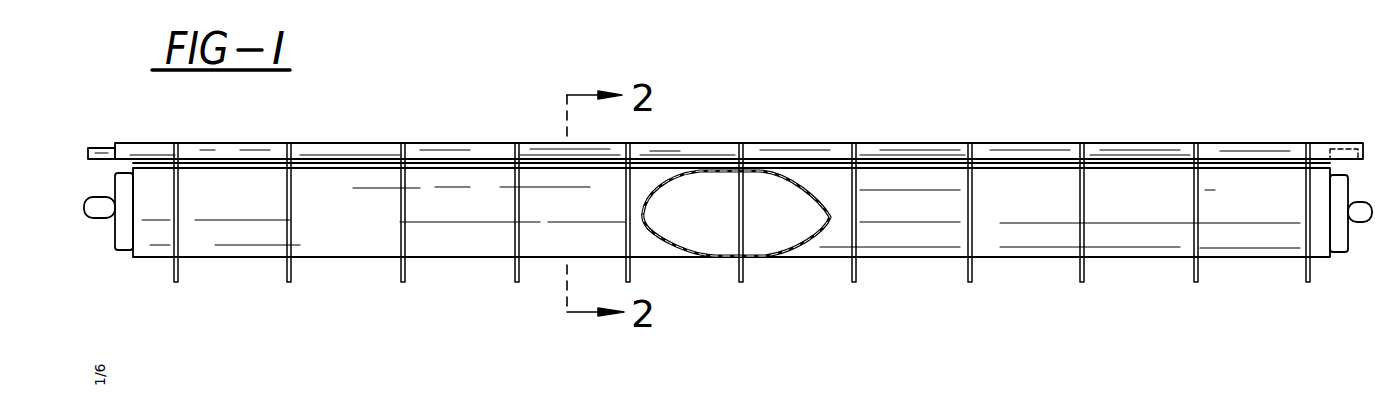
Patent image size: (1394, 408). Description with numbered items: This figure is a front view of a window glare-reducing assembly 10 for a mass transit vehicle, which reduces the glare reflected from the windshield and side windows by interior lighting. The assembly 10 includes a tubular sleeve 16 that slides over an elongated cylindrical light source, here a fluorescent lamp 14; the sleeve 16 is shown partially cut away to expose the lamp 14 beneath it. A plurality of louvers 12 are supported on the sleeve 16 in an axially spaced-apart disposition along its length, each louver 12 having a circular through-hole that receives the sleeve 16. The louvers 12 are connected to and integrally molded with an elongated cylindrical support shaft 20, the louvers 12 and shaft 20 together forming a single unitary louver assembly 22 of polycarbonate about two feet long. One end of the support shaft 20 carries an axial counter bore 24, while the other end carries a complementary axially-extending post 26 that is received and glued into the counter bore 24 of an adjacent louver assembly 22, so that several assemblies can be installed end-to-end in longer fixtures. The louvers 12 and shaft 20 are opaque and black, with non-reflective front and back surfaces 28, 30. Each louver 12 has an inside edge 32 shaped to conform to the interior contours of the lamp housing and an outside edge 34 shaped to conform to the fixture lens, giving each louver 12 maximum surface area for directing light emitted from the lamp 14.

The window glare-reducing assembly 10 is at (939, 133).
The louvers 12 is at (1194, 281).
The fluorescent lamp 14 is at (122, 248).
The tubular sleeve 16 is at (345, 238).
The support shaft 20 is at (442, 150).
The louver assembly 22 is at (341, 142).
The axial counter bore 24 is at (1363, 156).
The axially-extending post 26 is at (95, 147).
The front surface 28 is at (403, 268).
The back surface 30 is at (407, 238).
The inside edge 32 is at (975, 153).
The outside edge 34 is at (288, 272).